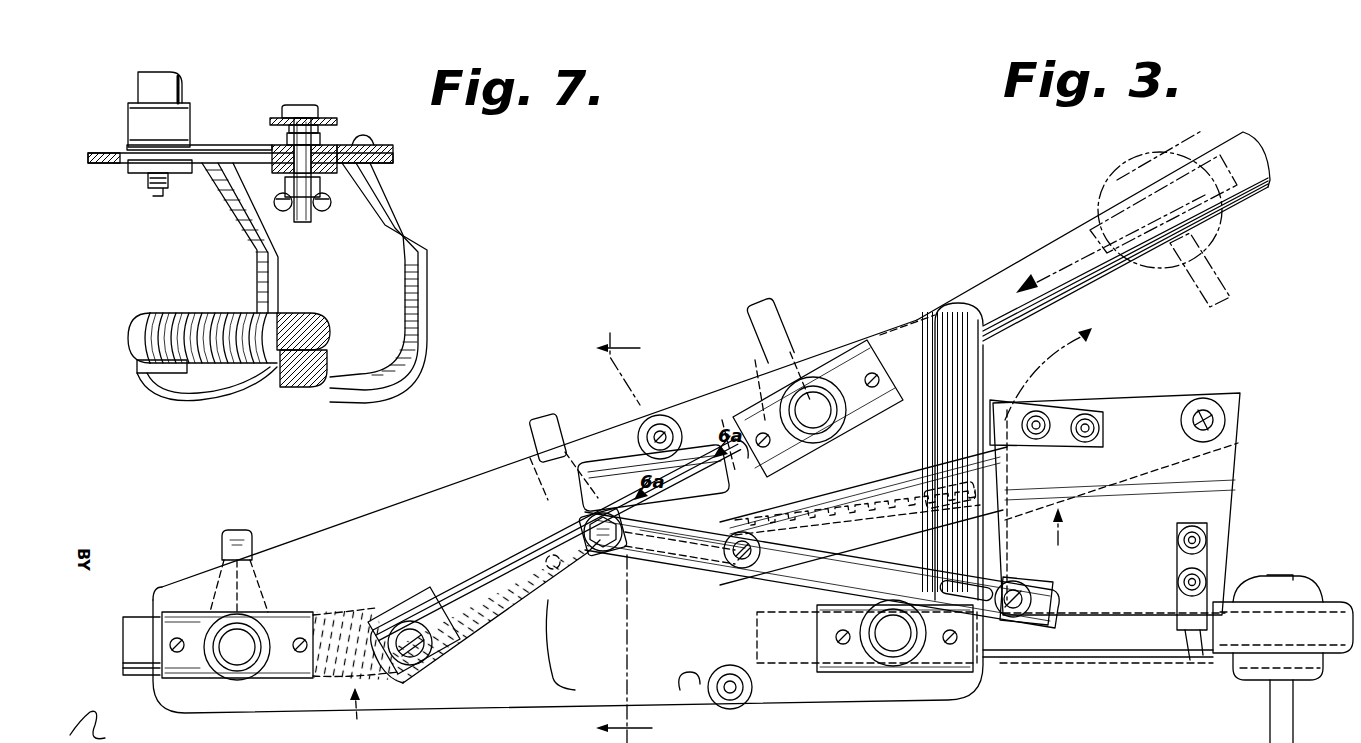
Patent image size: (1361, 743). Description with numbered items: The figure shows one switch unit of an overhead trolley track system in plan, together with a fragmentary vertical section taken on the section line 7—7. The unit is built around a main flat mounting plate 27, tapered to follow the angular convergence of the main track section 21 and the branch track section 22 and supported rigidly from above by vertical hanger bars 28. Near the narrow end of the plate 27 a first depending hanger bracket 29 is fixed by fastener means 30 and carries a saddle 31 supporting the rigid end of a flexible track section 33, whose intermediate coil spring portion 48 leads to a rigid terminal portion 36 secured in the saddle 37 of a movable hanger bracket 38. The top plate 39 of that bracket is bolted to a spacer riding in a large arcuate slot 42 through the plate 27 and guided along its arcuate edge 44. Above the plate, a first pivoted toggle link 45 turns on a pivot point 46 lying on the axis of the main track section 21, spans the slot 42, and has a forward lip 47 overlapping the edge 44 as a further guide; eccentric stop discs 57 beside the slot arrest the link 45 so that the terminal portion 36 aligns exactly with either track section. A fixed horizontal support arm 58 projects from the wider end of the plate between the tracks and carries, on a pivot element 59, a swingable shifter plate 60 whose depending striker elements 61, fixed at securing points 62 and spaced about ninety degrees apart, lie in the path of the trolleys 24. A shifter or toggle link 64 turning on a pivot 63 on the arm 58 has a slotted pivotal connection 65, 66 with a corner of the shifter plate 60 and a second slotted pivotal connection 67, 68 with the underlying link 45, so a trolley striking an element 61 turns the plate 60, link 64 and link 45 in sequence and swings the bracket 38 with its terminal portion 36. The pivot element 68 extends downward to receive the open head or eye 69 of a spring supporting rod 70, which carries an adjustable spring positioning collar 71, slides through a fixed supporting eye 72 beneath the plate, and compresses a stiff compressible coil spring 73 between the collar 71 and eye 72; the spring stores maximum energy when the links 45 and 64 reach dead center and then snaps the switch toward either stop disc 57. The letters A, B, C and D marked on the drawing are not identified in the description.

In FIG. 3, the main track section 21 is at (1152, 652).
In FIG. 3, the branch track section 22 is at (1255, 190).
In FIG. 3, the trolleys 24 is at (1150, 165).
In FIG. 3, the main flat mounting plate 27 is at (406, 510).
In FIG. 7, the vertical hanger bars 28 is at (138, 90).
In FIG. 3, the vertical hanger bars 28 is at (813, 410).
In FIG. 7, the first depending hanger bracket 29 is at (255, 242).
In FIG. 3, the first depending hanger bracket 29 is at (237, 528).
In FIG. 7, the fastener means 30 is at (140, 143).
In FIG. 3, the fastener means 30 is at (178, 640).
In FIG. 7, the saddle 31 is at (160, 372).
In FIG. 7, the flexible track section 33 is at (197, 303).
In FIG. 3, the flexible track section 33 is at (358, 700).
In FIG. 7, the rigid terminal portion 36 is at (300, 318).
In FIG. 3, the rigid terminal portion 36 is at (732, 488).
In FIG. 7, the saddle 37 is at (292, 382).
In FIG. 7, the movable hanger bracket 38 is at (418, 283).
In FIG. 3, the movable hanger bracket 38 is at (545, 422).
In FIG. 7, the top plate 39 is at (262, 158).
In FIG. 7, the arcuate slot 42 is at (182, 165).
In FIG. 3, the arcuate slot 42 is at (688, 692).
In FIG. 3, the arcuate edge 44 is at (747, 640).
In FIG. 7, the first pivoted toggle link 45 is at (280, 150).
In FIG. 3, the first pivoted toggle link 45 is at (578, 580).
In FIG. 3, the pivot point 46 is at (408, 640).
In FIG. 3, the forward lip 47 is at (698, 440).
In FIG. 3, the intermediate coil spring portion 48 is at (354, 608).
In FIG. 7, the eccentric stop discs 57 is at (380, 145).
In FIG. 3, the eccentric stop discs 57 is at (660, 415).
In FIG. 3, the fixed horizontal support arm 58 is at (966, 456).
In FIG. 3, the pivot element 59 is at (1203, 400).
In FIG. 3, the shifter plate 60 is at (1222, 490).
In FIG. 3, the striker elements 61 is at (998, 408).
In FIG. 3, the securing points 62 is at (1086, 415).
In FIG. 3, the pivot 63 is at (735, 560).
In FIG. 7, the shifter or toggle link 64 is at (330, 118).
In FIG. 3, the shifter or toggle link 64 is at (910, 572).
In FIG. 3, the slotted pivotal connection 65 is at (1030, 592).
In FIG. 3, the slotted pivotal connection 66 is at (975, 586).
In FIG. 3, the slotted pivotal connection 67 is at (646, 562).
In FIG. 7, the pivot element 68 is at (306, 105).
In FIG. 3, the pivot element 68 is at (605, 550).
In FIG. 7, the open head or eye 69 is at (325, 210).
In FIG. 3, the spring supporting rod 70 is at (807, 505).
In FIG. 3, the adjustable spring positioning collar 71 is at (672, 550).
In FIG. 3, the fixed supporting eye 72 is at (905, 490).
In FIG. 3, the compressible coil spring 73 is at (878, 490).
In FIG. 3, the link A is at (664, 552).
In FIG. 3, the lever B is at (545, 528).
In FIG. 7, the slider C is at (327, 168).
In FIG. 3, the slider C is at (605, 475).
In FIG. 3, the member D is at (722, 448).
In FIG. 3, the section line 7- 7 is at (612, 538).